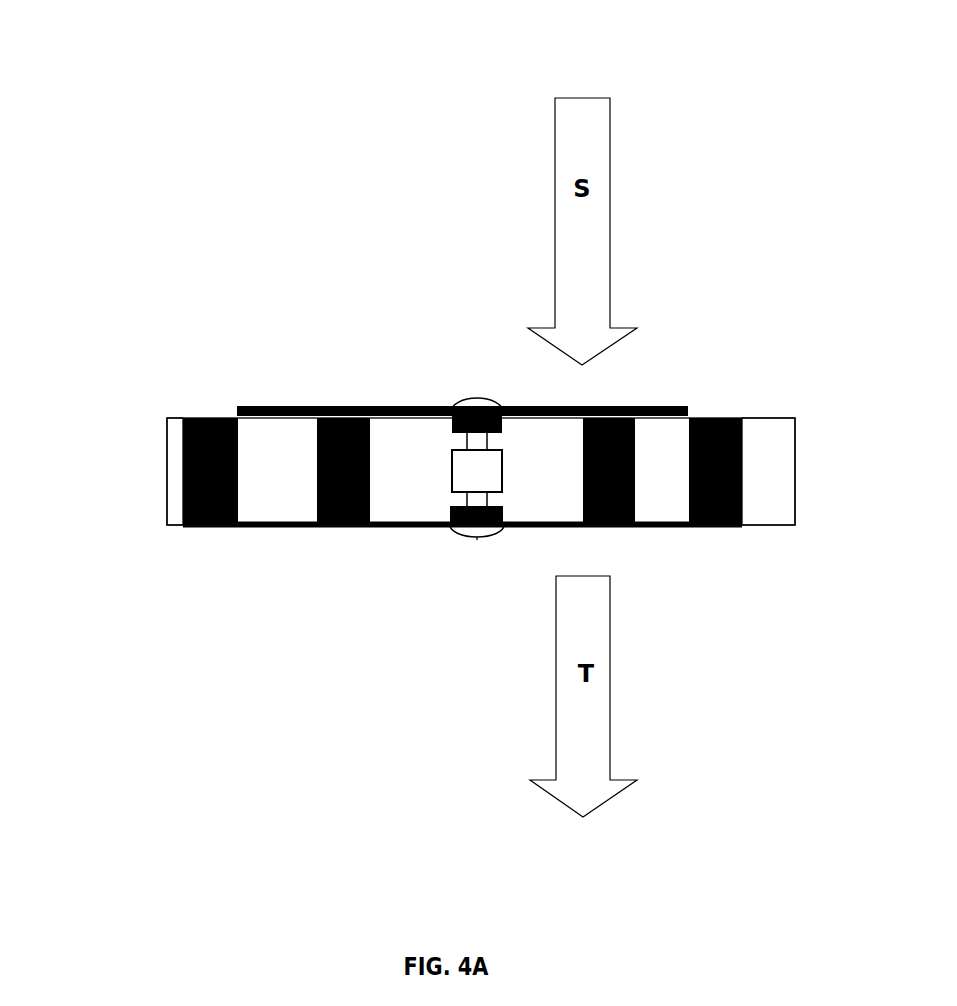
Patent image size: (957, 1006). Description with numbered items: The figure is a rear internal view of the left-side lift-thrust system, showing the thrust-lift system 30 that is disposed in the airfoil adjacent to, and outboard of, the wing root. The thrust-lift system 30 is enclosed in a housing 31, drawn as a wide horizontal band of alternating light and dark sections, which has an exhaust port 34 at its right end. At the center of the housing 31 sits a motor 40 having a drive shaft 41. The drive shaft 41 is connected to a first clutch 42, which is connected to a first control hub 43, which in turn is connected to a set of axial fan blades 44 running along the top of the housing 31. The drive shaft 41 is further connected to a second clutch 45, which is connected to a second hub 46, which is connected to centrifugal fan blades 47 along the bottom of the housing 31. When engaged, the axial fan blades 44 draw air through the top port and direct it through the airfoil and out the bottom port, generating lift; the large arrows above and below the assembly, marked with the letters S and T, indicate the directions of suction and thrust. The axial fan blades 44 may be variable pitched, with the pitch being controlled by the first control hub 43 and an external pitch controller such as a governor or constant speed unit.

The thrust-lift system 30 is at (296, 292).
The housing 31 is at (168, 417).
The exhaust port 34 is at (775, 497).
The motor 40 is at (468, 470).
The drive shaft 41 is at (483, 497).
The first clutch 42 is at (504, 428).
The first control hub 43 is at (462, 400).
The axial fan blades 44 is at (608, 404).
The second clutch 45 is at (448, 523).
The second hub 46 is at (477, 537).
The centrifugal fan blades 47 is at (182, 515).